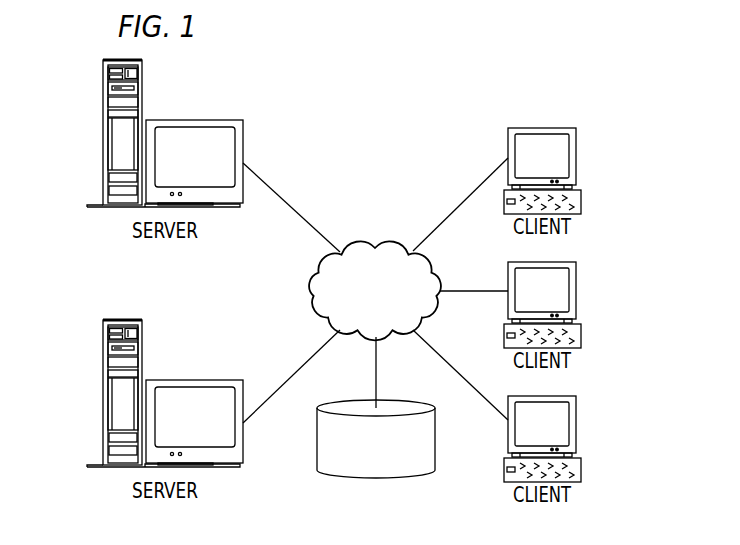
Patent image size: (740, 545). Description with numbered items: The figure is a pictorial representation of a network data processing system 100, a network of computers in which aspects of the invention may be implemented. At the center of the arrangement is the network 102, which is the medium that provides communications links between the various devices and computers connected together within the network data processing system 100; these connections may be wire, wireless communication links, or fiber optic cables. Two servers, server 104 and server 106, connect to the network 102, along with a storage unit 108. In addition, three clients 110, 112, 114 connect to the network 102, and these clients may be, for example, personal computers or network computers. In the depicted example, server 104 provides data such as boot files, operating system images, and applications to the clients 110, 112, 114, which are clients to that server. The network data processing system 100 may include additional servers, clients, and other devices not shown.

The network data processing system 100 is at (422, 140).
The network 102 is at (368, 242).
The server 104 is at (103, 134).
The server 106 is at (103, 392).
The storage unit 108 is at (390, 479).
The client 110 is at (577, 158).
The client 112 is at (577, 285).
The client 114 is at (577, 420).